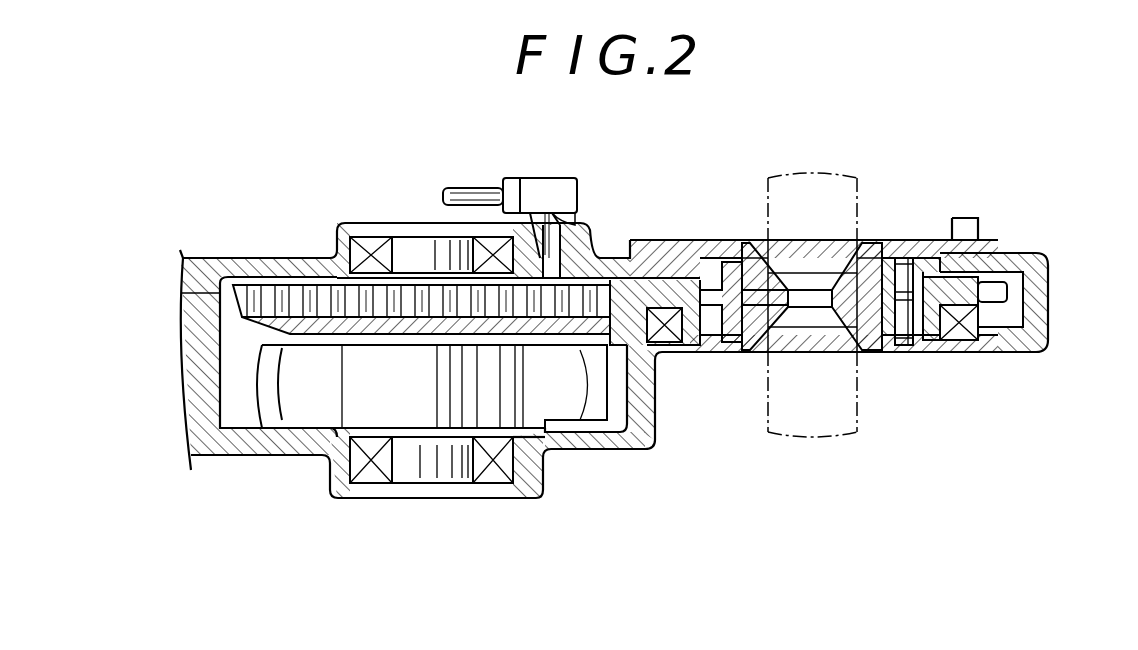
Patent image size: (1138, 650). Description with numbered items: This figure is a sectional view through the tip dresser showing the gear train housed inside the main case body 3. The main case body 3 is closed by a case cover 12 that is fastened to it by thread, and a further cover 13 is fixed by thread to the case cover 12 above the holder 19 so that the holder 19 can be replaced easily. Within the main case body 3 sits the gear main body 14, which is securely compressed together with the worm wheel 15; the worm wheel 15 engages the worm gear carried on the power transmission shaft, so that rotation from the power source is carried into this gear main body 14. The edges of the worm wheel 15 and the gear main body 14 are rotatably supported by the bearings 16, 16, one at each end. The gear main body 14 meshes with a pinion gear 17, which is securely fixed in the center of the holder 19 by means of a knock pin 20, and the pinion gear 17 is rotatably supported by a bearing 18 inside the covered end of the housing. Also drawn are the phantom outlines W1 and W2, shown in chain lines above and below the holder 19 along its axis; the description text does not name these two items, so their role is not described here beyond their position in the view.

The main case body 3 is at (1048, 316).
The case cover 12 is at (1032, 262).
The cover 13 is at (990, 240).
The gear main body 14 is at (283, 292).
The worm wheel 15 is at (308, 400).
The bearings 16 is at (370, 242).
The pinion gear 17 is at (1002, 352).
The bearing 18 is at (955, 352).
The holder 19 is at (888, 352).
The knock pin 20 is at (912, 352).
The workpiece shaft upper W1 is at (843, 198).
The workpiece shaft lower W2 is at (778, 385).